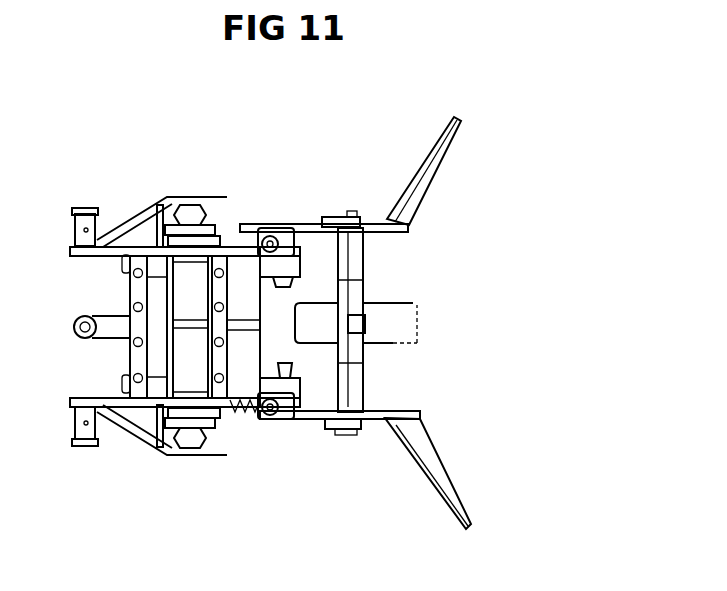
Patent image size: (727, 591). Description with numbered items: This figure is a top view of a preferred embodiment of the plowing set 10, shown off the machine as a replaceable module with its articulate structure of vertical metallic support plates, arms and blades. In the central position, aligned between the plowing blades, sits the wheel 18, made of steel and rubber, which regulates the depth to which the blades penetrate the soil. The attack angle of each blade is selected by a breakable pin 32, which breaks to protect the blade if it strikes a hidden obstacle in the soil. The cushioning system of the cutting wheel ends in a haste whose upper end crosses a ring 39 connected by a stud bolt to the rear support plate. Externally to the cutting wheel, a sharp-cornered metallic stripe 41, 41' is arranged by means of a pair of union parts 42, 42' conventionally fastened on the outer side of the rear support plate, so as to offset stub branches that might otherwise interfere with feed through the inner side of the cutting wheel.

The plowing set 10 is at (501, 152).
The wheel 18 is at (398, 322).
The breakable pin 32 is at (334, 217).
The ring 39 is at (270, 230).
The sharp-cornered metallic stripe 41 is at (282, 298).
The sharp-cornered metallic stripe 41' is at (309, 365).
The union part 42 is at (309, 180).
The union part 42' is at (289, 429).